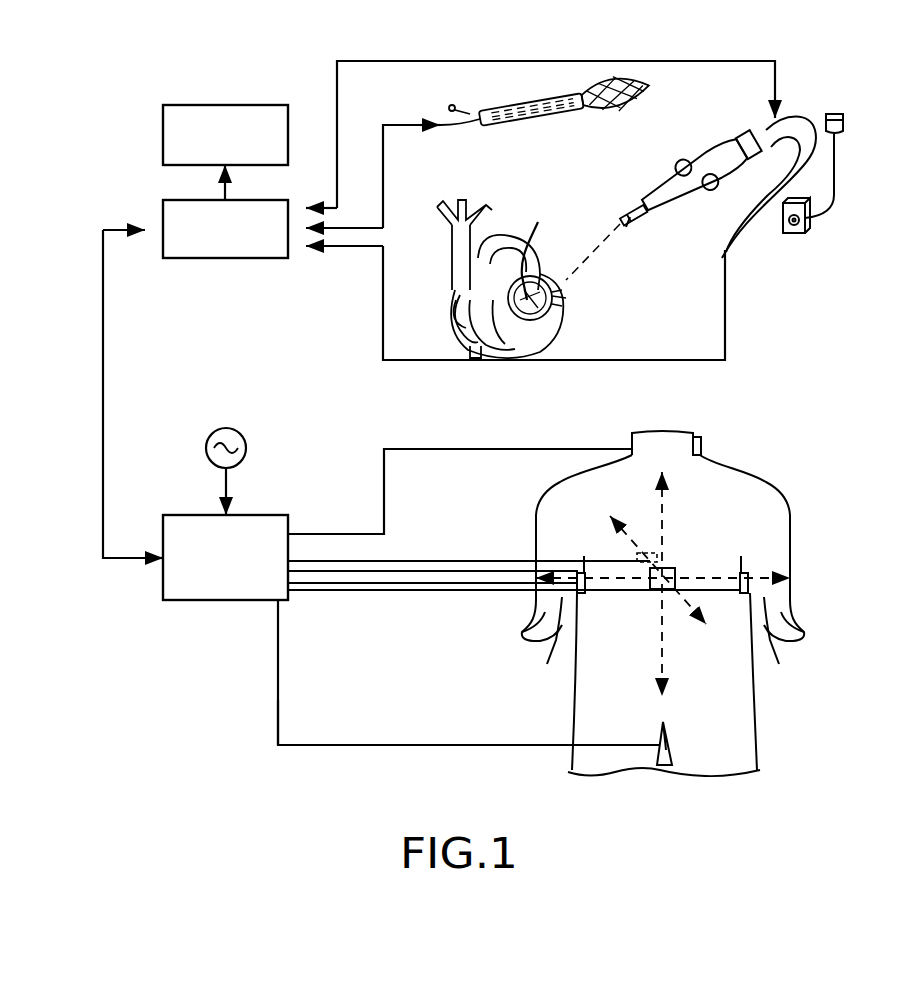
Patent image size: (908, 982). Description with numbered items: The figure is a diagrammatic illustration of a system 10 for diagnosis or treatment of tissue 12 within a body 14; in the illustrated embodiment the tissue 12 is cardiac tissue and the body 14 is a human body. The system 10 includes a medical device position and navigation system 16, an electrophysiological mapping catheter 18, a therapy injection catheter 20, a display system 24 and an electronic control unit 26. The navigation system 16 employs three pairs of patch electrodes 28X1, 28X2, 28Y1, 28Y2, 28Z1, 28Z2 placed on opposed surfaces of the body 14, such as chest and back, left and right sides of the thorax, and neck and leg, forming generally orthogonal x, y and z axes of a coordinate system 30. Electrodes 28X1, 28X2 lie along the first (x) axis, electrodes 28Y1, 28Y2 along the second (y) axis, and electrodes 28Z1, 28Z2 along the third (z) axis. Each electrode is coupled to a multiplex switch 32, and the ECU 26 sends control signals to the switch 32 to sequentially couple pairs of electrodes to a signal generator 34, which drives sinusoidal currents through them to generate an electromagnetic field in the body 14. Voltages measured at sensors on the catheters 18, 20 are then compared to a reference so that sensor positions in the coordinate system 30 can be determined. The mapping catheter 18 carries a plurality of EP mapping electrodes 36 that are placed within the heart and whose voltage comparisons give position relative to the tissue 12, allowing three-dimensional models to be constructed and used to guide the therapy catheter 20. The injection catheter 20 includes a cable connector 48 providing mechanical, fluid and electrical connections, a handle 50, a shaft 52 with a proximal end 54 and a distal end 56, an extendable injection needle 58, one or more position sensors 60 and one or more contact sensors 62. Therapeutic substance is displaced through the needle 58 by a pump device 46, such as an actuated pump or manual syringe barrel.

The system 10 is at (146, 76).
The tissue 12 is at (555, 331).
The body 14 is at (843, 128).
The medical device position and navigation system 16 is at (214, 674).
The electrophysiological (EP) mapping catheter 18 is at (548, 88).
The therapy injection catheter 20 is at (686, 156).
The display system 24 is at (163, 137).
The electronic control unit (ECU) 26 is at (163, 210).
The patch electrode 28X1 is at (575, 608).
The patch electrode 28X2 is at (760, 615).
The patch electrode 28Y1 is at (701, 447).
The patch electrode 28Y2 is at (663, 770).
The patch electrode 28Z1 is at (673, 571).
The patch electrode 28Z2 is at (637, 558).
The coordinate system 30 is at (818, 483).
The multiplex switch 32 is at (180, 600).
The signal generator 34 is at (247, 440).
The EP mapping electrodes 36 is at (634, 78).
The pump device 46 is at (820, 193).
The cable connector 48 is at (757, 150).
The handle 50 is at (722, 152).
The shaft 52 is at (622, 203).
The proximal end 54 is at (636, 226).
The distal end 56 is at (570, 298).
The injection needle 58 is at (529, 248).
The position sensors 60 is at (465, 326).
The contact sensors 62 is at (555, 285).